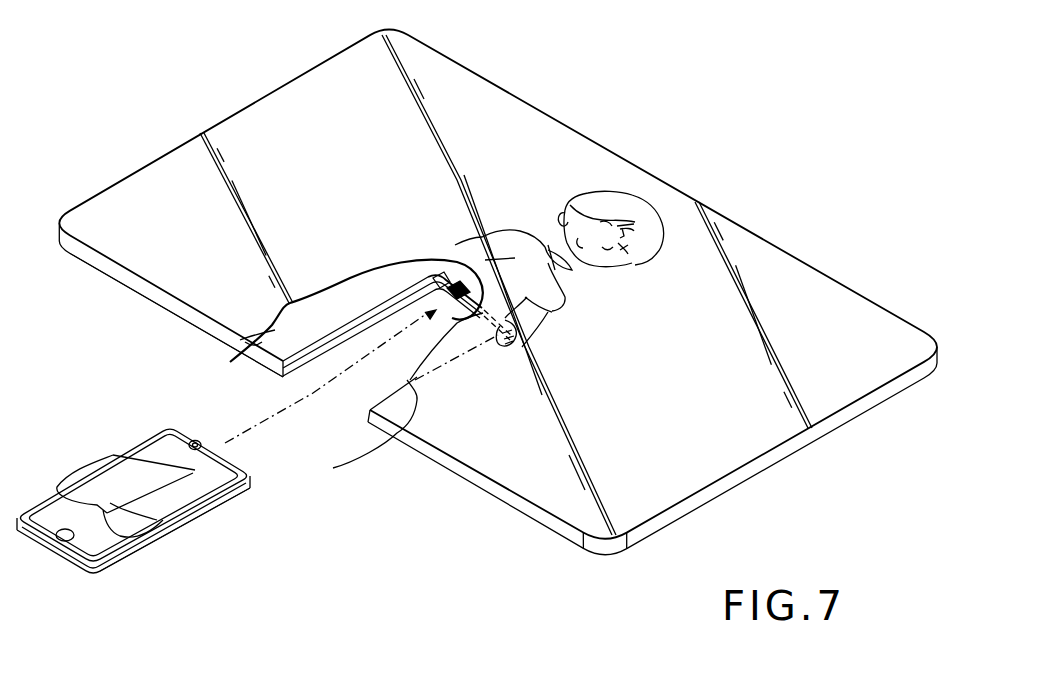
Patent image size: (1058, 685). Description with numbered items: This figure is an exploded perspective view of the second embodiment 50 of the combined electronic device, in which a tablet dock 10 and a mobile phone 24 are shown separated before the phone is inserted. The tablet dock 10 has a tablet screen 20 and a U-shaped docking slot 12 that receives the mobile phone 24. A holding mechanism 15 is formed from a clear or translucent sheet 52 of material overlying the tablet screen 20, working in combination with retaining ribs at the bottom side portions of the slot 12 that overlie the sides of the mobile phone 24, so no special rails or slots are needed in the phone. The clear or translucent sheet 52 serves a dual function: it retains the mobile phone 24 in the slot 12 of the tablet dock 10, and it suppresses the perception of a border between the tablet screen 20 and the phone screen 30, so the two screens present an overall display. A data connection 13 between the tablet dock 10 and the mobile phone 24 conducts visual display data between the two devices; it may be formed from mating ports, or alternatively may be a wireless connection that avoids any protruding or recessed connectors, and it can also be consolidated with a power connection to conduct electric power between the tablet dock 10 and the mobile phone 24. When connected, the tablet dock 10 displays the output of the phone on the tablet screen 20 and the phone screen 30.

The second embodiment 50 is at (186, 90).
The clear or translucent sheet 52 is at (354, 173).
The tablet dock 10 is at (152, 304).
The tablet screen 20 is at (283, 346).
The docking slot 12 is at (388, 322).
The data connection 13 is at (428, 316).
The holding mechanism 15 is at (367, 421).
The phone screen 30 is at (122, 470).
The mobile phone 24 is at (189, 531).